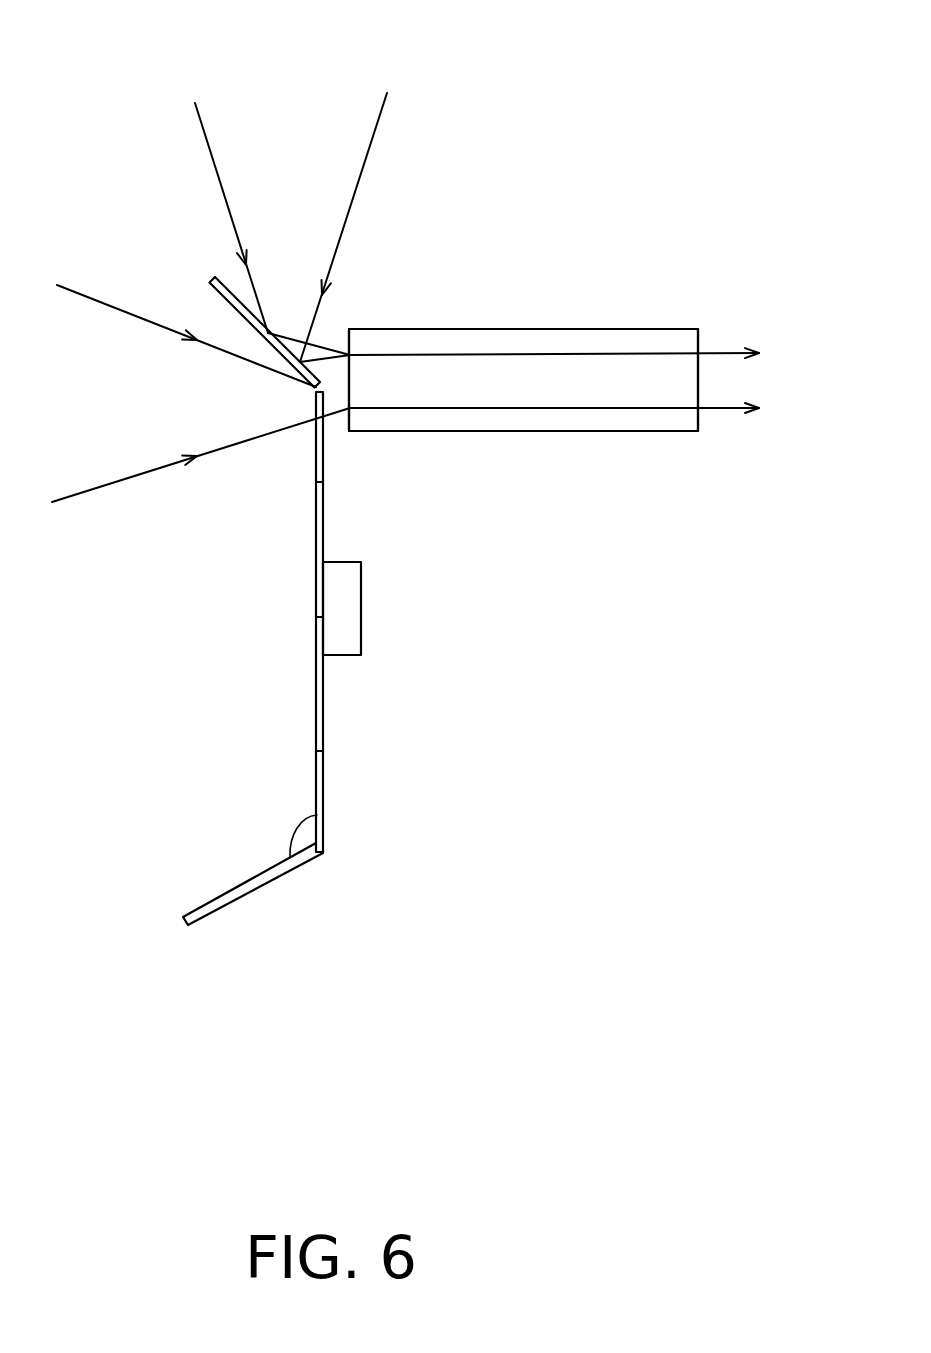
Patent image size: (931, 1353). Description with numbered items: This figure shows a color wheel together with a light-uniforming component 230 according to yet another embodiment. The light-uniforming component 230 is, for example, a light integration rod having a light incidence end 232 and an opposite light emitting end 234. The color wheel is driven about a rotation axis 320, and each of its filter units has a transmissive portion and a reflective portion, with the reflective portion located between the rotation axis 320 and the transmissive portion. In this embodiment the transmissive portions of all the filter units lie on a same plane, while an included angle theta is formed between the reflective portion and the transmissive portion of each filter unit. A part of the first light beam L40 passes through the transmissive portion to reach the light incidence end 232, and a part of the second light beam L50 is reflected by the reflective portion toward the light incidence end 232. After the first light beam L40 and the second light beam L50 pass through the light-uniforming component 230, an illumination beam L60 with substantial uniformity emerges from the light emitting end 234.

The second light beam L50 is at (353, 142).
The first light beam L40 is at (100, 475).
The light-uniforming component 230 is at (552, 332).
The light incidence end 232 is at (350, 375).
The light emitting end 234 is at (700, 337).
The illumination beam L60 is at (718, 410).
The rotation axis 320 is at (362, 623).